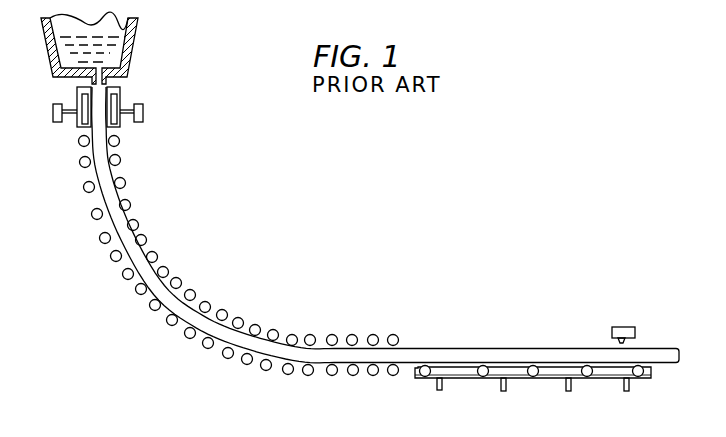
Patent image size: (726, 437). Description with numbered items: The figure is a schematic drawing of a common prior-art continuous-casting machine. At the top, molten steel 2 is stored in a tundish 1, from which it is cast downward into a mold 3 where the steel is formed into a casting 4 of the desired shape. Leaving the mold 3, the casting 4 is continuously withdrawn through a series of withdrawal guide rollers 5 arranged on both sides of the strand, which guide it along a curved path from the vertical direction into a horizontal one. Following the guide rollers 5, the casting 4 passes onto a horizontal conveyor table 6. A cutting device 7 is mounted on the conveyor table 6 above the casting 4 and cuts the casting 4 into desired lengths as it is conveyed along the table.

The tundish 1 is at (130, 40).
The molten steel 2 is at (113, 53).
The mold 3 is at (121, 122).
The casting 4 is at (110, 200).
The withdrawal guide rollers 5 is at (193, 293).
The horizontal conveyor table 6 is at (430, 378).
The cutting device 7 is at (623, 327).